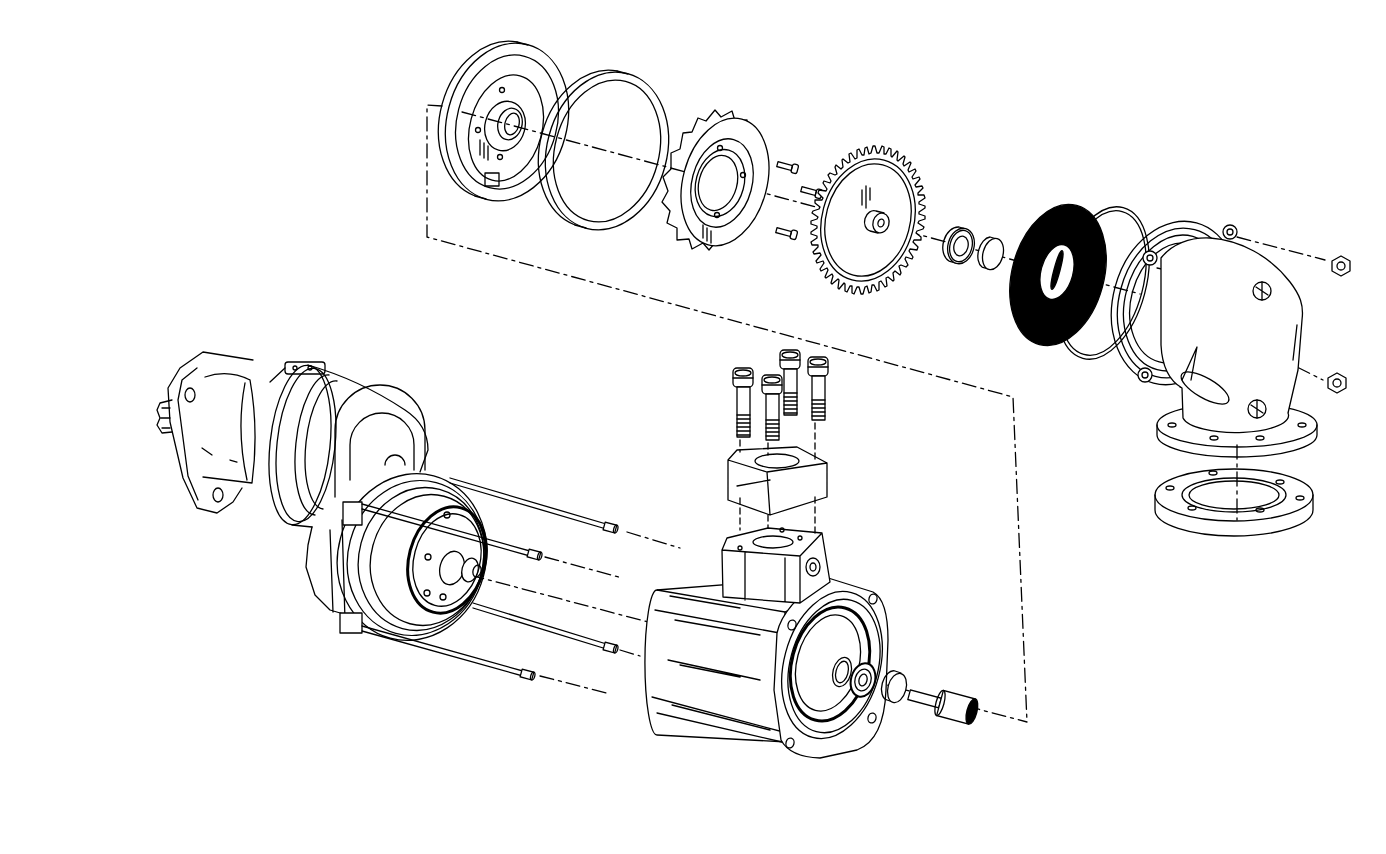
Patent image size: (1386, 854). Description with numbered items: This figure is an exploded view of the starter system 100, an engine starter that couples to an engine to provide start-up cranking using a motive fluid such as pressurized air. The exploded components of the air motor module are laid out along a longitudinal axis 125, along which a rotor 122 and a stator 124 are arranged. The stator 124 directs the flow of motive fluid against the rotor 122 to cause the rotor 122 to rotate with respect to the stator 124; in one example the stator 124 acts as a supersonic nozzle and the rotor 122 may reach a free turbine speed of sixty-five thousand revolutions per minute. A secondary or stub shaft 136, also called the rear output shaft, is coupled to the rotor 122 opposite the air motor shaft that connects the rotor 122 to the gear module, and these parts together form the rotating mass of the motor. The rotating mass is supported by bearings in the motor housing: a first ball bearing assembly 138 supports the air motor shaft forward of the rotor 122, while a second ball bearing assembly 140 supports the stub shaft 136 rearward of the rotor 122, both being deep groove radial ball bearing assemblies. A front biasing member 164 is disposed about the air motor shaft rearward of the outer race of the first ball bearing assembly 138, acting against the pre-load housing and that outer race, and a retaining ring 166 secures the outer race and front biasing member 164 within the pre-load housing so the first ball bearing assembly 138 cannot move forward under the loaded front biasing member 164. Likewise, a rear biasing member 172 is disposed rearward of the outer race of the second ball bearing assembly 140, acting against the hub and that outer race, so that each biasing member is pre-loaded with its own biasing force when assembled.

The starter system 100 is at (1193, 133).
The longitudinal axis 125 is at (426, 100).
The stator 124 is at (751, 138).
The rotor 122 is at (893, 195).
The stub shaft 136 is at (893, 222).
The second ball bearing assembly 140 is at (961, 264).
The rear biasing member 172 is at (989, 272).
The front biasing member 164 is at (900, 672).
The first ball bearing assembly 138 is at (857, 700).
The retaining ring 166 is at (834, 688).